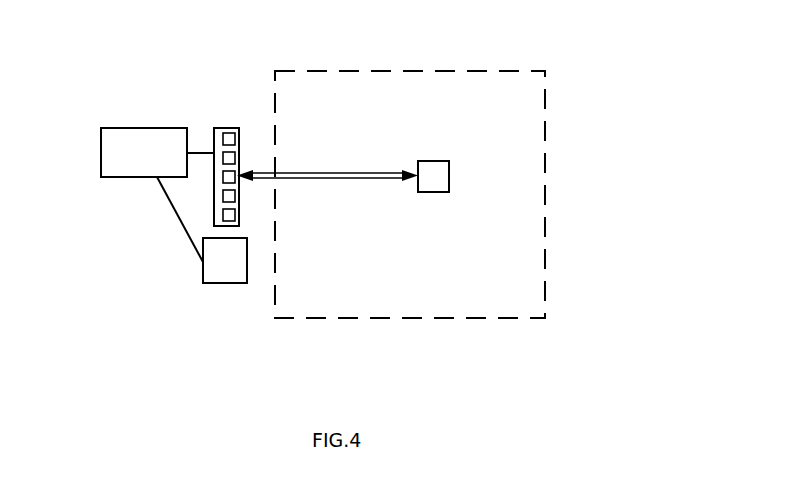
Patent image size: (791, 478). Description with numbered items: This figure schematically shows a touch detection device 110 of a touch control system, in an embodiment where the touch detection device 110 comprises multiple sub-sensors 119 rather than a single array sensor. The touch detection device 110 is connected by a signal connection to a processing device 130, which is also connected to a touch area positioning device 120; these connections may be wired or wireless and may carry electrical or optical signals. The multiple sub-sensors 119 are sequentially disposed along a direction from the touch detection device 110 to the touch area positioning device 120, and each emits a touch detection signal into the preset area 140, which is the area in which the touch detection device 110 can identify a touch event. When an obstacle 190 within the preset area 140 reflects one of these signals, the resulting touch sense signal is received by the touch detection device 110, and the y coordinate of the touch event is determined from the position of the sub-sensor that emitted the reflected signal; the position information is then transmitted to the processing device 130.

The touch detection device 110 is at (164, 120).
The sub-sensors 119 is at (289, 79).
The touch area positioning device 120 is at (167, 323).
The processing device 130 is at (113, 159).
The preset area 140 is at (467, 240).
The obstacle 190 is at (401, 103).